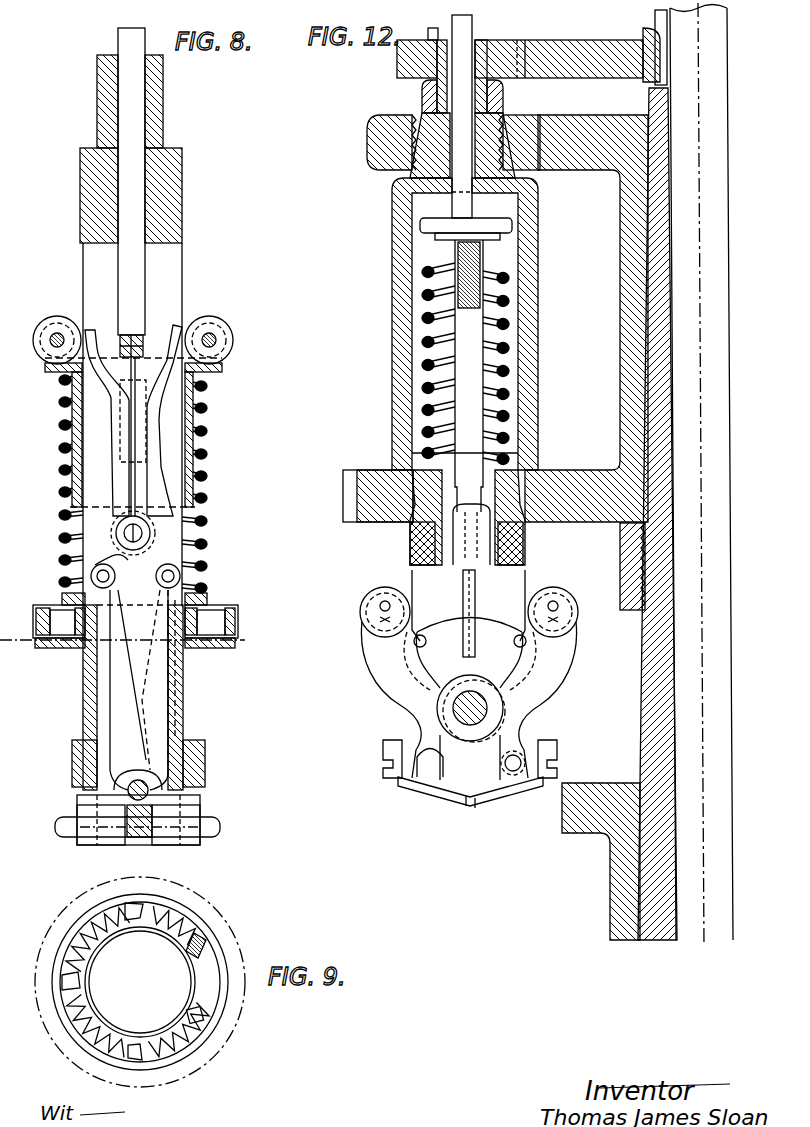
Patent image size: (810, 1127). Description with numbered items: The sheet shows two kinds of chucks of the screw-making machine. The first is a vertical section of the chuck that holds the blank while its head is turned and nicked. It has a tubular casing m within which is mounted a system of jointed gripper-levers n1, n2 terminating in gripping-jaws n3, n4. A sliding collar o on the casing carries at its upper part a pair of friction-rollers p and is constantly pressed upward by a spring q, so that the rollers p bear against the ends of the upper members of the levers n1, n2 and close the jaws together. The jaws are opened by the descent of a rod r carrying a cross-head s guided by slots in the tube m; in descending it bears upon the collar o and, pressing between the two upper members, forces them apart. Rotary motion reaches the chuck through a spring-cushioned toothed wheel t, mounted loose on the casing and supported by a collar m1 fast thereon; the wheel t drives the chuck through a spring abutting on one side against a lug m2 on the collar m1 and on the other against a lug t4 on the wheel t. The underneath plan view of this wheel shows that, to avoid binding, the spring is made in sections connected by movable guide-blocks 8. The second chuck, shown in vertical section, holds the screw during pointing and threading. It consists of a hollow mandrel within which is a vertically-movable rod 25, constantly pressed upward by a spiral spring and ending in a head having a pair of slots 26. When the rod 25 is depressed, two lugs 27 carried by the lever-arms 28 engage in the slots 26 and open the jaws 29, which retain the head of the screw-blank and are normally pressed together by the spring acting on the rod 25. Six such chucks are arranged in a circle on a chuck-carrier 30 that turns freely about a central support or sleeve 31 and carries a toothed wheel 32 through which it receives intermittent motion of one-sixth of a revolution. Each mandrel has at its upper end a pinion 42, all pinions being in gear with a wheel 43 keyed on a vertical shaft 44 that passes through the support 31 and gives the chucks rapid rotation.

In FIG. 8, the rod r is at (130, 87).
In FIG. 8, the cross-head s is at (118, 337).
In FIG. 8, the friction-rollers p is at (52, 318).
In FIG. 8, the sliding collar o is at (200, 421).
In FIG. 8, the tubular casing m is at (175, 462).
In FIG. 8, the gripper-lever n1 is at (122, 496).
In FIG. 8, the gripper-lever n2 is at (148, 496).
In FIG. 8, the spring q is at (195, 521).
In FIG. 8, the movable guide-blocks 8 is at (62, 623).
In FIG. 9, the movable guide-blocks 8 is at (120, 912).
In FIG. 8, the lug m2 is at (212, 623).
In FIG. 9, the lug m2 is at (206, 940).
In FIG. 8, the spring-cushioned toothed wheel t is at (236, 618).
In FIG. 9, the spring-cushioned toothed wheel t is at (208, 912).
In FIG. 9, the lug t4 is at (205, 1016).
In FIG. 8, the collar m1 is at (62, 650).
In FIG. 8, the gripping-jaw n3 is at (100, 830).
In FIG. 8, the gripping-jaw n4 is at (178, 832).
In FIG. 12, the vertically-movable rod 25 is at (462, 28).
In FIG. 12, the pinion 42 is at (412, 62).
In FIG. 12, the wheel 43 is at (562, 58).
In FIG. 12, the chuck-carrier 30 is at (563, 145).
In FIG. 12, the central support or sleeve 31 is at (662, 254).
In FIG. 12, the toothed wheel 32 is at (372, 497).
In FIG. 12, the slots 26 is at (440, 578).
In FIG. 12, the lugs 27 is at (413, 643).
In FIG. 12, the lever-arms 28 is at (400, 678).
In FIG. 12, the jaws 29 is at (460, 790).
In FIG. 12, the vertical shaft 44 is at (716, 456).